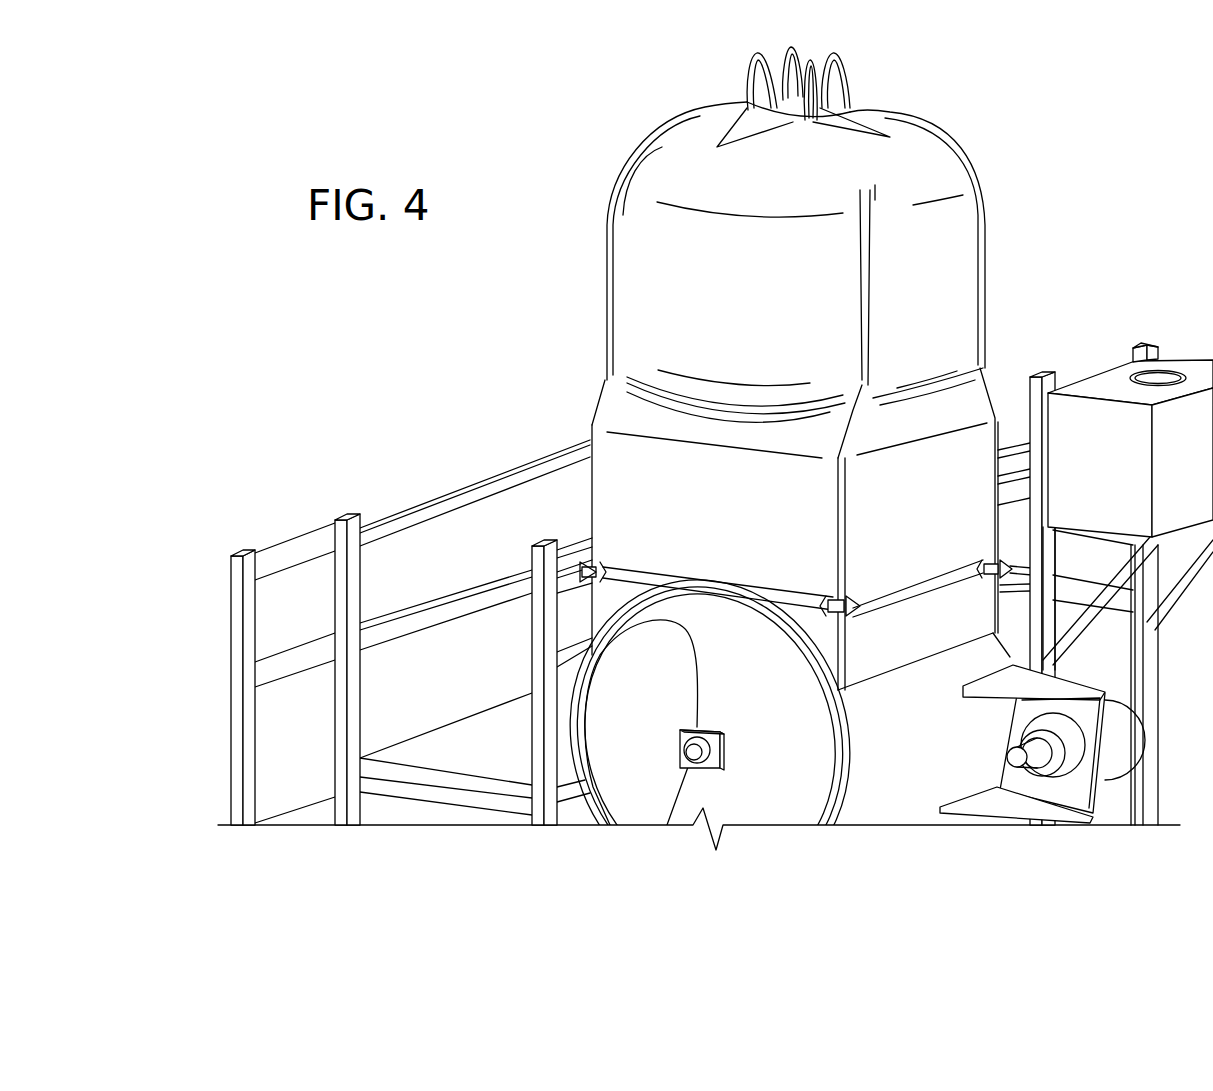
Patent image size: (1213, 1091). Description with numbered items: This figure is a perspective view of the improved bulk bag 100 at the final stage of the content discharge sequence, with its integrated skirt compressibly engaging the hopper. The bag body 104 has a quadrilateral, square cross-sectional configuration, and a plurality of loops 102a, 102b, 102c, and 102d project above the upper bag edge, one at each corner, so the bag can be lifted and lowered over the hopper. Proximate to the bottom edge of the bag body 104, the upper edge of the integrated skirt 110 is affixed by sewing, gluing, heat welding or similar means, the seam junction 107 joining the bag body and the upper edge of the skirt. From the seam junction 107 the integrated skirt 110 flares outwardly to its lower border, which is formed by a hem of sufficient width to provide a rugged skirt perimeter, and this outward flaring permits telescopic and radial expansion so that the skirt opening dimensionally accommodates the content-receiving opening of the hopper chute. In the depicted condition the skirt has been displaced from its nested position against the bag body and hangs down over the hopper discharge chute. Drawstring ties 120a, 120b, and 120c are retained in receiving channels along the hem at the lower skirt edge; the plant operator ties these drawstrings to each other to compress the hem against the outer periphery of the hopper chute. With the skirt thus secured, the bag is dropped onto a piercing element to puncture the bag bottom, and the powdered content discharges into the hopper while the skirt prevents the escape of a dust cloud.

The improved bulk bag 100 is at (1065, 152).
The loop 102a is at (750, 66).
The loop 102b is at (797, 93).
The loop 102c is at (797, 53).
The loop 102d is at (850, 67).
The bag body 104 is at (607, 244).
The seam junction 107 is at (607, 377).
The integrated skirt 110 is at (600, 413).
The drawstring tie 120a is at (615, 567).
The drawstring tie 120b is at (832, 597).
The drawstring tie 120c is at (990, 560).